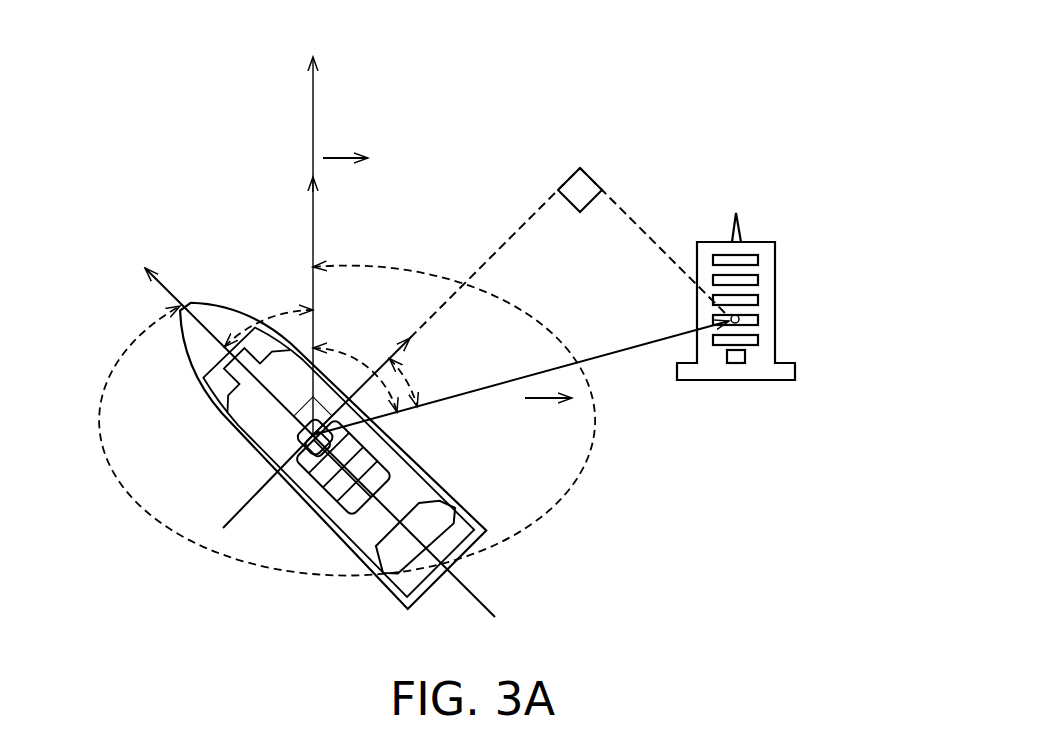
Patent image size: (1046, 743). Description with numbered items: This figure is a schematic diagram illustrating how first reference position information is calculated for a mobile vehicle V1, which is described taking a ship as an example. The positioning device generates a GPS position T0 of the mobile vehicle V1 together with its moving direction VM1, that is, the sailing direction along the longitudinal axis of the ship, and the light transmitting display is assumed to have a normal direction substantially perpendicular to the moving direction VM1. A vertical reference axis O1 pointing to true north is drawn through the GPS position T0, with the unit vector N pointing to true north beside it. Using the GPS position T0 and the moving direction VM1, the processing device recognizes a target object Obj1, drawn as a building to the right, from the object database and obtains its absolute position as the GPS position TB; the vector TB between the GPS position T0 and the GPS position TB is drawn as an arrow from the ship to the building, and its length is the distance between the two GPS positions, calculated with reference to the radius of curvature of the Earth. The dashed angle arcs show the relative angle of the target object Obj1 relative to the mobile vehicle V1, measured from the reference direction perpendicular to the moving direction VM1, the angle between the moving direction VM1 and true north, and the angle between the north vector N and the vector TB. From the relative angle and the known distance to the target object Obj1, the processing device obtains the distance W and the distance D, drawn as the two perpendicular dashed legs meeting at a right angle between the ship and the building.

The north reference axis O1 is at (311, 103).
The unit vector pointing to the true north N is at (345, 175).
The moving direction VM1 is at (167, 298).
The mobile vehicle V1 is at (486, 537).
The GPS position of the mobile vehicle T0 is at (289, 434).
The distance D is at (412, 348).
The distance W is at (653, 241).
The GPS position of the target object TB is at (560, 376).
The target object Obj1 is at (797, 370).